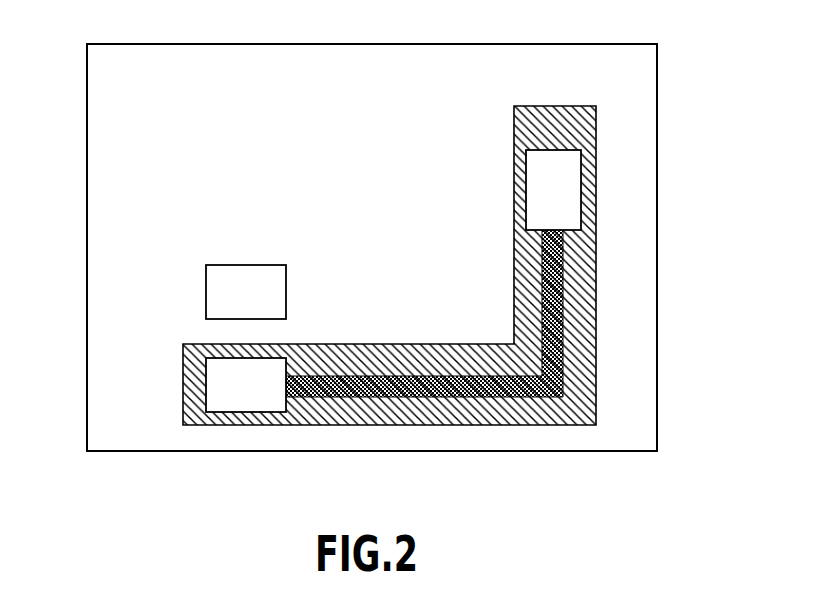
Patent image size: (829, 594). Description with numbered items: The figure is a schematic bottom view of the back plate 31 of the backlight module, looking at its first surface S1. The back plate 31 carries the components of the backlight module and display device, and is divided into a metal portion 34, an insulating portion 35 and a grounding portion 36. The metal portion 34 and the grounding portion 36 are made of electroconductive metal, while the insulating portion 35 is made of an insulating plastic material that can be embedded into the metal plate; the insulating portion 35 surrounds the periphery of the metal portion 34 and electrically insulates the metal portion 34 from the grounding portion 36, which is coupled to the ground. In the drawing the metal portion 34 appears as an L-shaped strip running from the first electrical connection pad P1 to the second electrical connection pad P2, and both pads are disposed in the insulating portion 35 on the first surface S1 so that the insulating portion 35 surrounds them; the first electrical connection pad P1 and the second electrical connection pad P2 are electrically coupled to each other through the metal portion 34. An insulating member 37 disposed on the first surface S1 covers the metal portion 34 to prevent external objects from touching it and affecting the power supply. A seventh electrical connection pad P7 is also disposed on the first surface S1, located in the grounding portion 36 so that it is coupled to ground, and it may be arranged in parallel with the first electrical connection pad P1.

The back plate 31 is at (658, 76).
The grounding portion 36 is at (413, 56).
The first surface S1 is at (117, 126).
The insulating portion 35 is at (343, 355).
The metal portion 34 is at (395, 376).
The insulating member 37 is at (448, 376).
The first electrical connection pad P1 is at (246, 385).
The second electrical connection pad P2 is at (553, 190).
The seventh electrical connection pad P7 is at (246, 292).